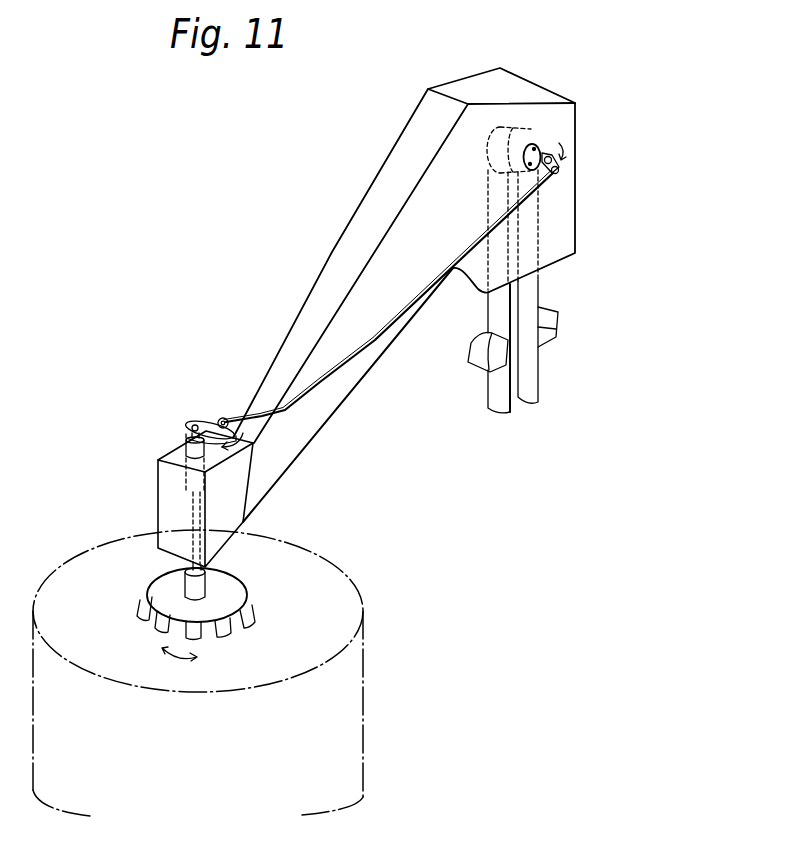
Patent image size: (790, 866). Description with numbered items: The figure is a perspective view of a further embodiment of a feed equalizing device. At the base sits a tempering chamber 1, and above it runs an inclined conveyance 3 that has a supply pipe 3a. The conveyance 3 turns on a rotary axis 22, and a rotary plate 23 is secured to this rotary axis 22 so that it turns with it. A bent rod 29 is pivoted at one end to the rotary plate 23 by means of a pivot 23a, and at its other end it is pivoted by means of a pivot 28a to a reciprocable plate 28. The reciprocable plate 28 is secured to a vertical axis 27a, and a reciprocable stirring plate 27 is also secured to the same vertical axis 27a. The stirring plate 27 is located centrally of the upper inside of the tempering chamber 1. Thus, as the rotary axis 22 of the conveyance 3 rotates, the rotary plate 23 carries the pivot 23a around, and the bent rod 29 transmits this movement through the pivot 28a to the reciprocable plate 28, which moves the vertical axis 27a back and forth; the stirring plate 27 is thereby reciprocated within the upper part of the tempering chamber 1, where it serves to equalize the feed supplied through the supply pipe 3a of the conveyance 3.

The tempering chamber 1 is at (337, 737).
The conveyance 3 is at (565, 237).
The supply pipe 3a is at (357, 218).
The rotary axis 22 is at (536, 153).
The rotary plate 23 is at (550, 158).
The pivot 23a is at (559, 169).
The reciprocable stirring plate 27 is at (238, 598).
The vertical axis 27a is at (183, 575).
The reciprocable plate 28 is at (200, 424).
The pivot 28a is at (221, 418).
The bent rod 29 is at (337, 380).